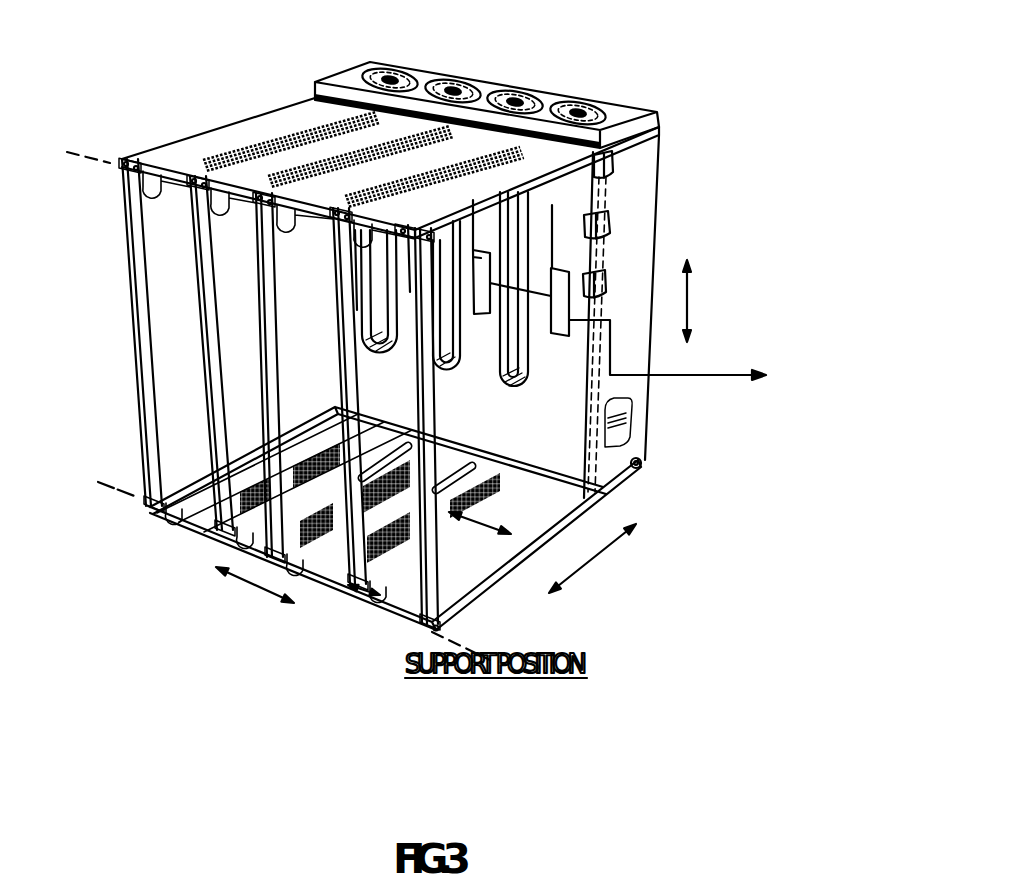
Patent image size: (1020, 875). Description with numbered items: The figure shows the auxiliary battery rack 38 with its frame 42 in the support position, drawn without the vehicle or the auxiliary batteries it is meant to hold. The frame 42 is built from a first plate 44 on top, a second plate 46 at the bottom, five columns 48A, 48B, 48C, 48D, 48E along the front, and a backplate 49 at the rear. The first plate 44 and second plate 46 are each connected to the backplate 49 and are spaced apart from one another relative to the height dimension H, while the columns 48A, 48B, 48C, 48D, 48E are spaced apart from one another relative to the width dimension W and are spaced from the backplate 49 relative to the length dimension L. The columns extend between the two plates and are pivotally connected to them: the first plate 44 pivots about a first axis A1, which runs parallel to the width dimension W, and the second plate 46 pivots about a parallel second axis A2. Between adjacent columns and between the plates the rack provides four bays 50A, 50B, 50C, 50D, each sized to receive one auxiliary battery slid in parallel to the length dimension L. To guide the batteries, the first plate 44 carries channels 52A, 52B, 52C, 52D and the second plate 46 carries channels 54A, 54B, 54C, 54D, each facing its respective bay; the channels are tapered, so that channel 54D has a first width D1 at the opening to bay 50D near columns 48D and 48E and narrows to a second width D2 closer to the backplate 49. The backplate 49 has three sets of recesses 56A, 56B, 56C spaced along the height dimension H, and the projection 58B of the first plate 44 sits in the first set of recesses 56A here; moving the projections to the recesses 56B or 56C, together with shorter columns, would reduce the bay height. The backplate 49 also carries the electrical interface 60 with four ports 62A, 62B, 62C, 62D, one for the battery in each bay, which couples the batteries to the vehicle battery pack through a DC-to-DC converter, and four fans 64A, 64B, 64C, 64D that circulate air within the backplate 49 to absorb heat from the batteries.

The auxiliary battery rack 38 is at (706, 417).
The frame 42 is at (112, 423).
The first plate 44 is at (233, 137).
The second plate 46 is at (486, 583).
The column 48A is at (147, 477).
The column 48B is at (214, 534).
The column 48C is at (270, 552).
The column 48D is at (350, 586).
The column 48E is at (415, 626).
The backplate 49 is at (638, 229).
The bay 50A is at (199, 327).
The bay 50B is at (260, 347).
The bay 50C is at (308, 358).
The bay 50D is at (409, 421).
The channel 52A is at (159, 181).
The channel 52B is at (222, 198).
The channel 52C is at (290, 213).
The channel 52D is at (372, 230).
The channel 54A is at (168, 522).
The channel 54B is at (240, 542).
The channel 54C is at (295, 571).
The channel 54D is at (383, 600).
The first set of recesses 56A is at (612, 155).
The second set of recesses 56B is at (610, 222).
The third set of recesses 56C is at (607, 282).
The projection 58B is at (603, 163).
The electrical interface 60 is at (574, 308).
The port 62A is at (568, 336).
The port 62B is at (474, 313).
The port 62C is at (410, 292).
The port 62D is at (362, 356).
The fan 64A is at (389, 69).
The fan 64B is at (455, 80).
The fan 64C is at (520, 91).
The fan 64D is at (593, 102).
The height dimension H is at (689, 300).
The width dimension W is at (248, 582).
The length dimension L is at (596, 560).
The first width D1 is at (364, 595).
The second width D2 is at (512, 535).
The first axis A1 is at (86, 156).
The second axis A2 is at (117, 495).